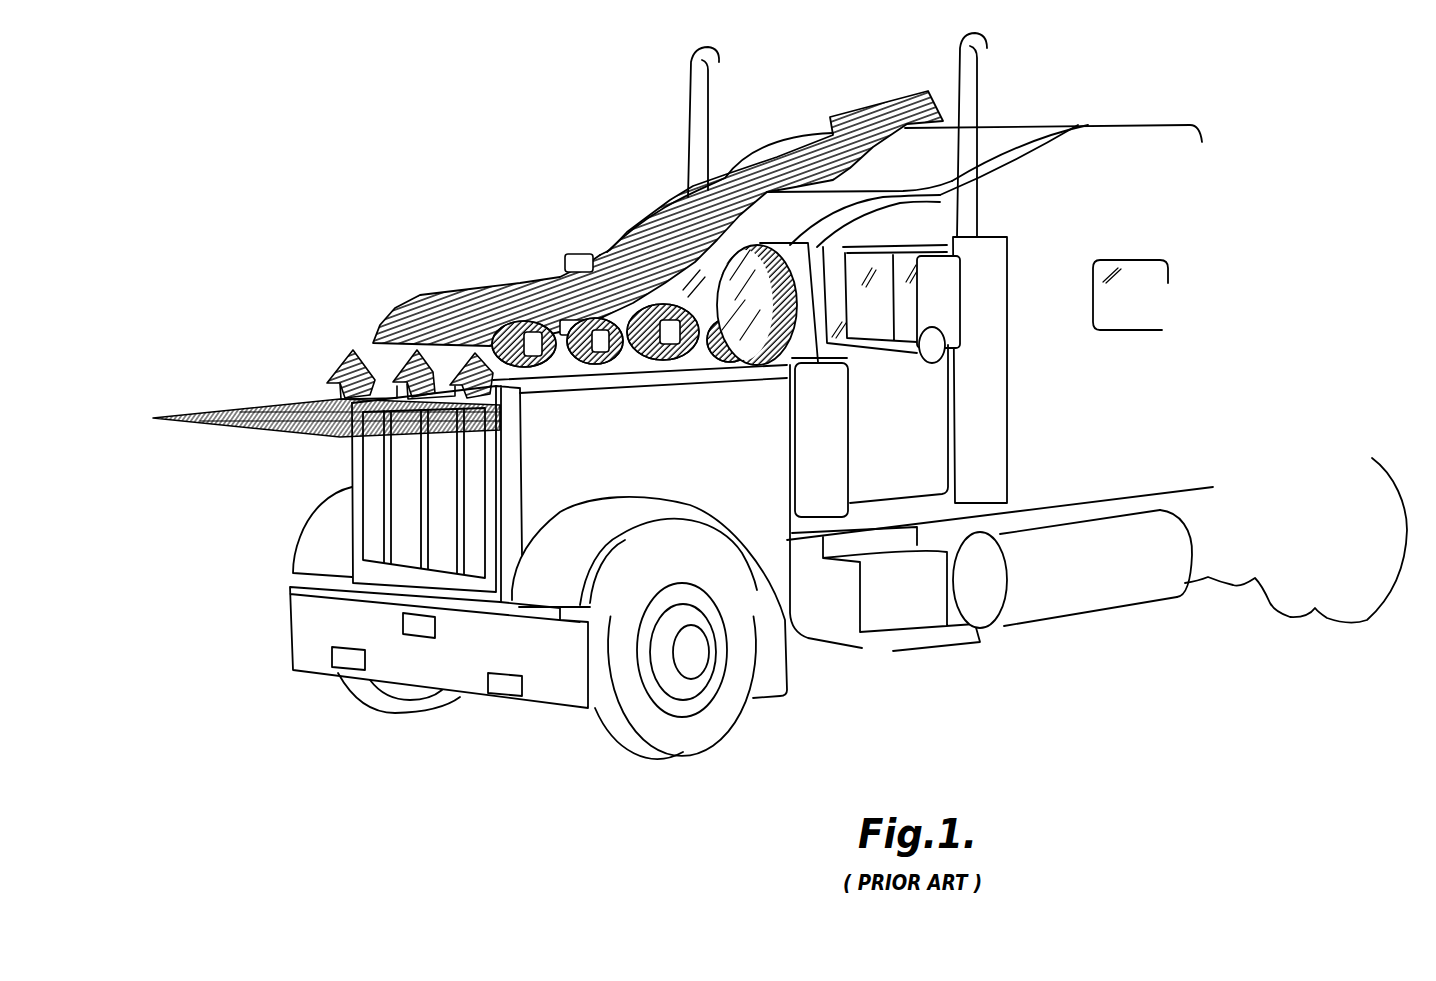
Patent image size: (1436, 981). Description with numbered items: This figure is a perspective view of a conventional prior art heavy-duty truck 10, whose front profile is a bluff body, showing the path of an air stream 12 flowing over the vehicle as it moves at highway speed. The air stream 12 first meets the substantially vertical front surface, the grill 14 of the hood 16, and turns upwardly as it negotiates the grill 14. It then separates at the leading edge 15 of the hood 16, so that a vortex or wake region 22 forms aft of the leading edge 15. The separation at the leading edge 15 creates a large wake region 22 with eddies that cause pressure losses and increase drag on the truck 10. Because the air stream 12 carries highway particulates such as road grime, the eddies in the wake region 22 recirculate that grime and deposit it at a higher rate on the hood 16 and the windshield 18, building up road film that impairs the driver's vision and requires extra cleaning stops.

The Class 8 truck 10 is at (390, 147).
The air stream 12 is at (457, 290).
The grill 14 is at (372, 488).
The leading edge 15 is at (360, 347).
The hood 16 is at (640, 368).
The windshield 18 is at (645, 220).
The wake region 22 is at (607, 363).